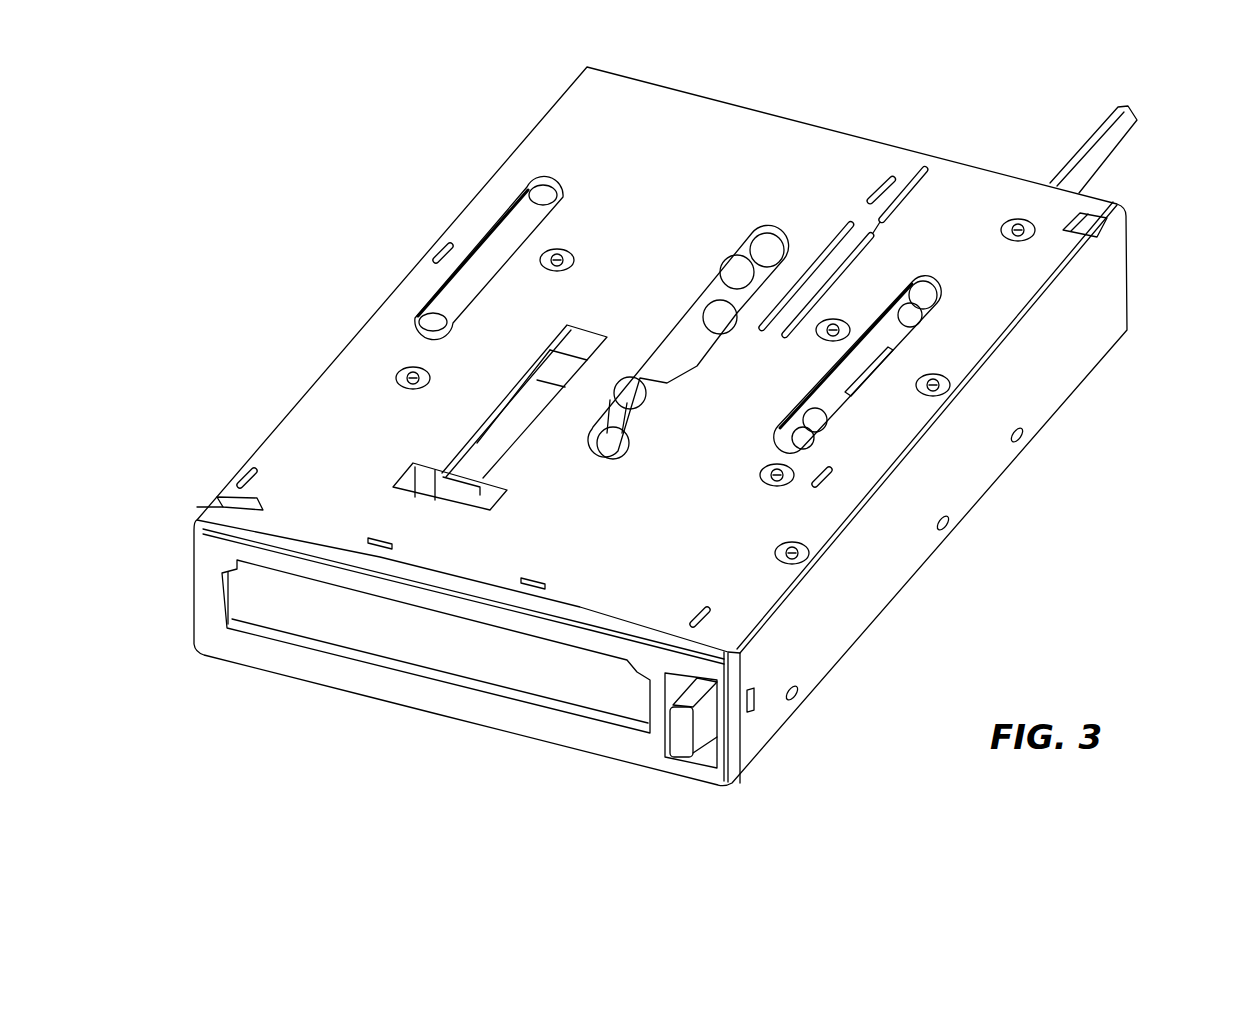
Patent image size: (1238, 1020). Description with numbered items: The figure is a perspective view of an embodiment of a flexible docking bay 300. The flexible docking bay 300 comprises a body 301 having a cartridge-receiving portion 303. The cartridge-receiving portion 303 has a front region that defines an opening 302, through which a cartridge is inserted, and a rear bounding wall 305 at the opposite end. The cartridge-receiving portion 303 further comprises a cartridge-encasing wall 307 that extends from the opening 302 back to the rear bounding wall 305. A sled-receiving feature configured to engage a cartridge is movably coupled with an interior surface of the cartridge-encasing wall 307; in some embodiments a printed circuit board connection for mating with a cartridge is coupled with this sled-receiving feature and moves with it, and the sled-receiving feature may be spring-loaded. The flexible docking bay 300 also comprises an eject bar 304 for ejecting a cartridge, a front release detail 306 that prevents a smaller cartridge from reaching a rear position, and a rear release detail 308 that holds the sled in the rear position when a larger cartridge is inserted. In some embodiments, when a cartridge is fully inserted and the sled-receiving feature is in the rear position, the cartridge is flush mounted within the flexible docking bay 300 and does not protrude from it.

The flexible docking bay 300 is at (1141, 418).
The body 301 is at (742, 819).
The opening 302 is at (211, 670).
The cartridge-receiving portion 303 is at (200, 547).
The eject bar 304 is at (673, 745).
The rear bounding wall 305 is at (1127, 275).
The front release detail 306 is at (480, 440).
The cartridge-encasing wall 307 is at (560, 147).
The rear release detail 308 is at (893, 177).